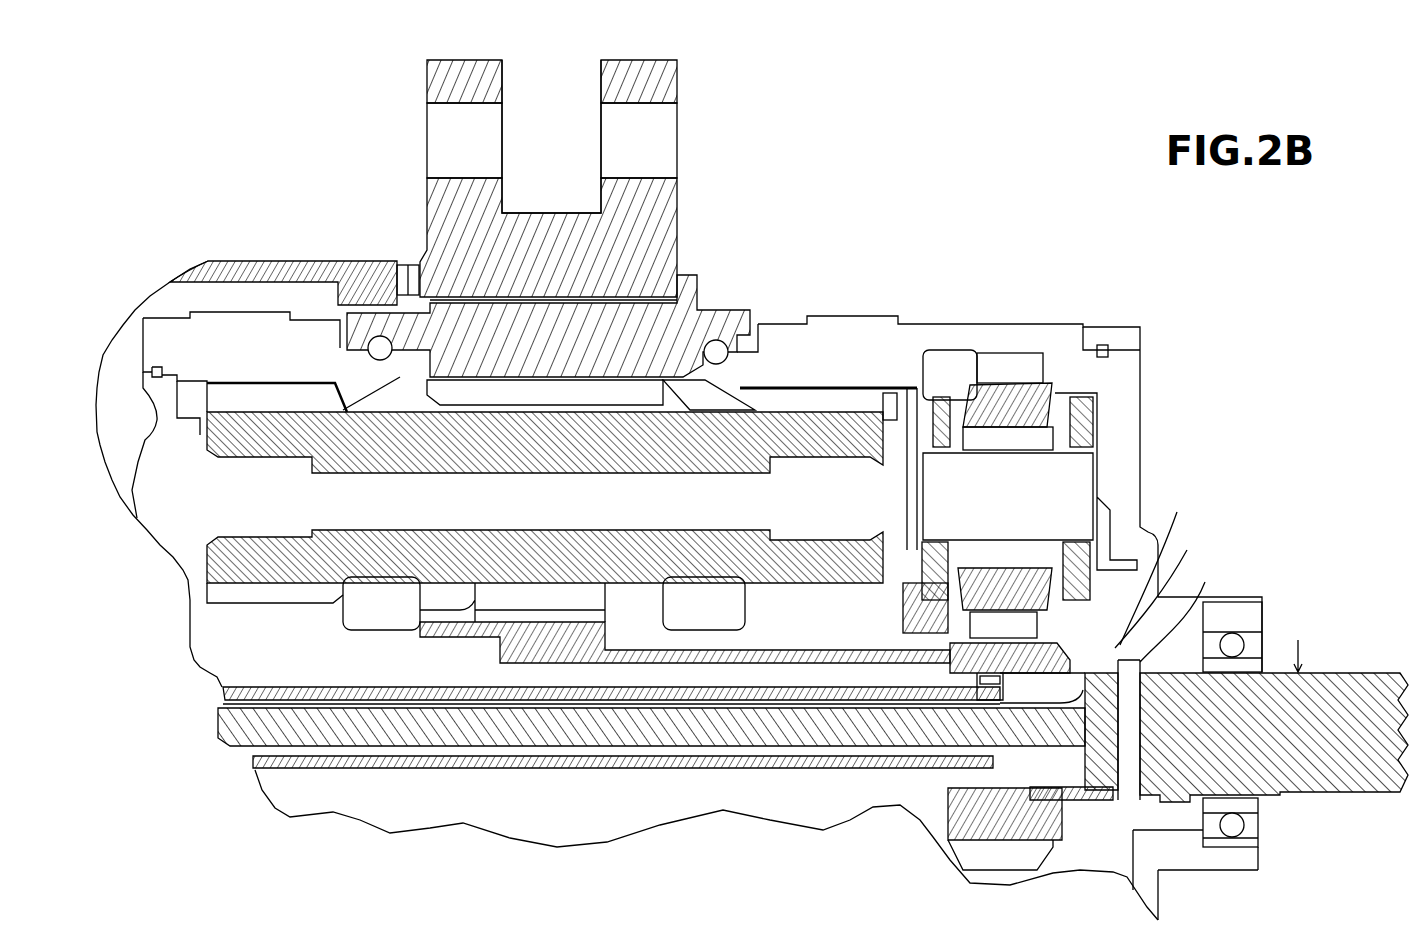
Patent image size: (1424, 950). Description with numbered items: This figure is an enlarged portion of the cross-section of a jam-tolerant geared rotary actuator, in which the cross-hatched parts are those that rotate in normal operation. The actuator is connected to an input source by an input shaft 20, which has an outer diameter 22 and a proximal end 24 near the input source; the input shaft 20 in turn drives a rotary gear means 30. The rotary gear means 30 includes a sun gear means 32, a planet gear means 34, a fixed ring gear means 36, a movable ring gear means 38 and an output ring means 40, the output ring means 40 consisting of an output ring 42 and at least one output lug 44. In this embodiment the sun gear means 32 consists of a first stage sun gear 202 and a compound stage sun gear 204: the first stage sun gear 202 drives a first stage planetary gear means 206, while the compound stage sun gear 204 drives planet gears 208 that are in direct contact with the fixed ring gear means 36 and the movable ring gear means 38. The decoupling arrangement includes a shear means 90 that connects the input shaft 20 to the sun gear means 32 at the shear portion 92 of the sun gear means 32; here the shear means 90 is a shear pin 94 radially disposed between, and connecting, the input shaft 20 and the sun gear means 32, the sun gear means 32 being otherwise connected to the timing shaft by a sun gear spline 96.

The input shaft 20 is at (1325, 673).
The outer diameter 22 is at (1296, 840).
The proximal end 24 is at (1365, 674).
The rotary gear means 30 is at (1083, 325).
The sun gear means 32 is at (1065, 652).
The planet gear means 34 is at (705, 395).
The fixed ring gear means 36 is at (893, 314).
The movable ring gear means 38 is at (732, 303).
The output ring means 40 is at (665, 60).
The output ring 42 is at (678, 213).
The output lug 44 is at (598, 65).
The shear means 90 is at (1186, 608).
The shear portion 92 is at (1166, 585).
The shear pin 94 is at (1225, 602).
The sun gear spline 96 is at (1003, 677).
The first stage sun gear 202 is at (1165, 563).
The compound stage sun gear 204 is at (624, 638).
The first stage planetary gear means 206 is at (1060, 385).
The planet gears 208 is at (773, 427).